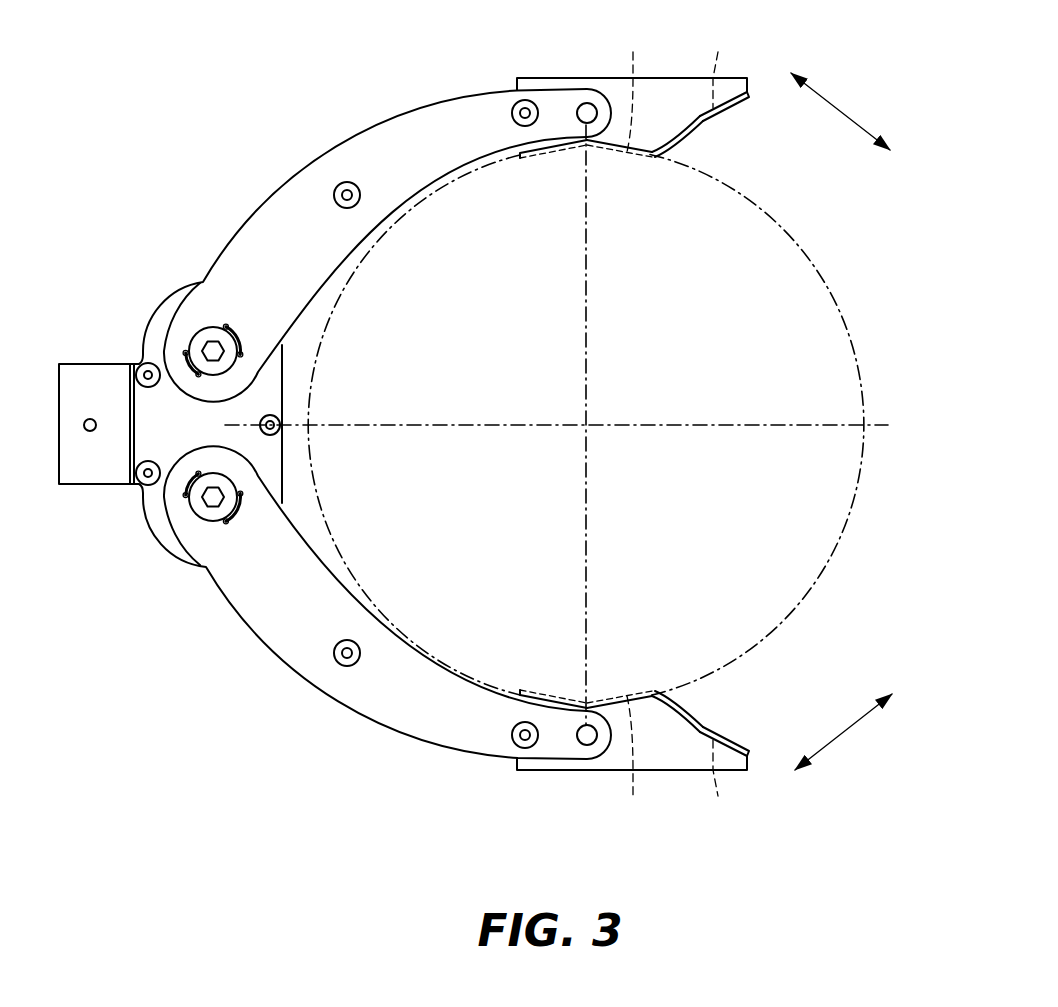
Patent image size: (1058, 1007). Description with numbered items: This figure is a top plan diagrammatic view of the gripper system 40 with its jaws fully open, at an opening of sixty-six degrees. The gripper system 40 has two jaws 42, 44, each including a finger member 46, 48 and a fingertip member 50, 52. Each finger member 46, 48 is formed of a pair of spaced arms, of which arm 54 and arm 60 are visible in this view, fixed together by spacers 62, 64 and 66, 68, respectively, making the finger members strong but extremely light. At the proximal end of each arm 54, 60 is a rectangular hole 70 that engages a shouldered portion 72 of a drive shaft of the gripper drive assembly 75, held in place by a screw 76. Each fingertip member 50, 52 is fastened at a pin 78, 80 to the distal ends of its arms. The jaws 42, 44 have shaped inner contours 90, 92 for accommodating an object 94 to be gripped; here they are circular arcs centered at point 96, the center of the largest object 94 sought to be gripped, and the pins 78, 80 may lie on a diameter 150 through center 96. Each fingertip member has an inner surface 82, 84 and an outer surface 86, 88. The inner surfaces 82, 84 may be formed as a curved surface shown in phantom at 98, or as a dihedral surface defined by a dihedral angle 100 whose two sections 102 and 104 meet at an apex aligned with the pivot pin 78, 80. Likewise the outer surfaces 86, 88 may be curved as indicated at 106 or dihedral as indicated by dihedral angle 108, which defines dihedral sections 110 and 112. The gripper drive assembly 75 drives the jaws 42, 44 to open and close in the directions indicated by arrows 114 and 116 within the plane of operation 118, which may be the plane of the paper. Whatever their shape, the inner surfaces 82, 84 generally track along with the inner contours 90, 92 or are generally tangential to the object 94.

The gripper system 40 is at (270, 43).
The jaw 42 is at (372, 214).
The jaw 44 is at (372, 632).
The finger member 46 is at (380, 122).
The finger member 48 is at (361, 716).
The fingertip member 50 is at (681, 76).
The fingertip member 52 is at (681, 772).
The arm 54 is at (292, 248).
The arm 60 is at (299, 635).
The spacer 62 is at (360, 198).
The spacer 64 is at (512, 110).
The spacer 66 is at (361, 652).
The spacer 68 is at (512, 738).
The rectangular hole 70 is at (227, 322).
The shouldered portion 72 is at (245, 345).
The gripper drive assembly 75 is at (112, 332).
The screw 76 is at (206, 343).
The pin 78 is at (582, 104).
The pin 80 is at (582, 745).
The inner surface 82 is at (570, 164).
The inner surface 84 is at (571, 684).
The outer surface 86 is at (760, 166).
The outer surface 88 is at (762, 677).
The inner contour 90 is at (443, 180).
The inner contour 92 is at (367, 607).
The object 94 is at (813, 265).
The point 96 is at (598, 415).
The curved surface 98 is at (633, 422).
The dihedral angle 100 is at (586, 158).
The section 102 is at (542, 157).
The section 104 is at (628, 160).
The curved surface 106 is at (726, 422).
The dihedral angle 108 is at (706, 119).
The dihedral section 110 is at (678, 140).
The dihedral section 112 is at (755, 96).
The arrow 114 is at (845, 733).
The arrow 116 is at (842, 111).
The plane of operation 118 is at (887, 357).
The diameter 150 is at (595, 322).